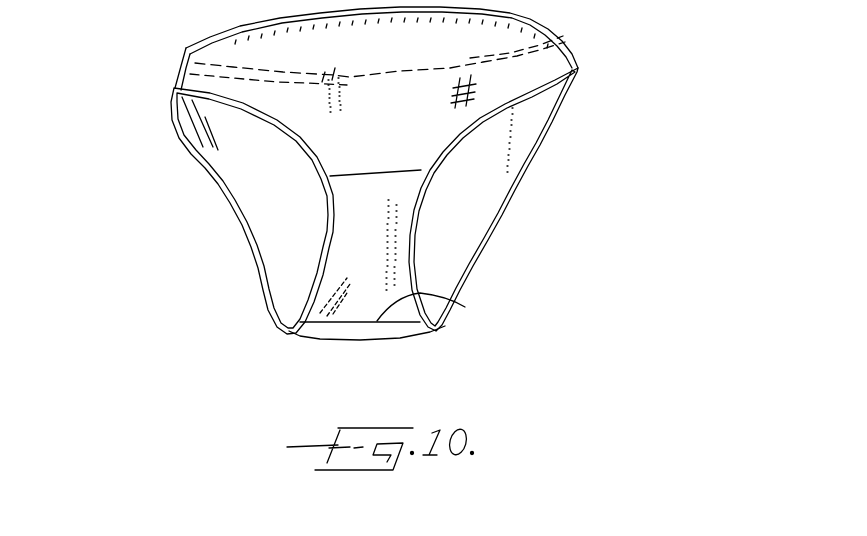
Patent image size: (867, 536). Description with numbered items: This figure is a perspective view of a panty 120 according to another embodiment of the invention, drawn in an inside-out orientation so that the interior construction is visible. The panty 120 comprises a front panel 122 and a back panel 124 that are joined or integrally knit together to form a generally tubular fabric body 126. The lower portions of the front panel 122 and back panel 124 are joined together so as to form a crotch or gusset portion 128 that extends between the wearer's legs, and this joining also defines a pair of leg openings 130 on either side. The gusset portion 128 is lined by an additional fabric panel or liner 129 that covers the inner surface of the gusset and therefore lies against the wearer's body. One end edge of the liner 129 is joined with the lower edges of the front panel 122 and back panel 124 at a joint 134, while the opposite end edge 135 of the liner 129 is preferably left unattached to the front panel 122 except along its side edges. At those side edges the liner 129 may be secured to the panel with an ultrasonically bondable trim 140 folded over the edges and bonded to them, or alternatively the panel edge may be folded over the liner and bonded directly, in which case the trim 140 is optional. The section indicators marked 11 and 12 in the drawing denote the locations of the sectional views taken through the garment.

The panty 120 is at (630, 38).
The front panel 122 is at (408, 62).
The back panel 124 is at (490, 190).
The tubular fabric body 126 is at (163, 70).
The gusset portion 128 is at (428, 269).
The liner 129 is at (387, 220).
The leg openings 130 is at (250, 188).
The joint 134 is at (465, 307).
The opposite end edge 135 is at (345, 176).
The ultrasonically bondable trim 140 is at (318, 273).
The section line 11- 11 is at (368, 163).
The section line 12- 12 is at (316, 243).